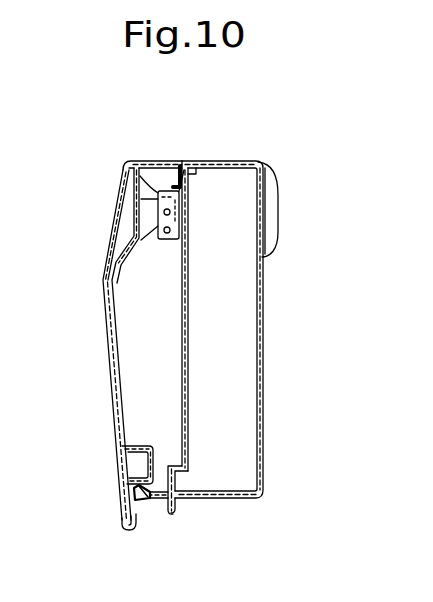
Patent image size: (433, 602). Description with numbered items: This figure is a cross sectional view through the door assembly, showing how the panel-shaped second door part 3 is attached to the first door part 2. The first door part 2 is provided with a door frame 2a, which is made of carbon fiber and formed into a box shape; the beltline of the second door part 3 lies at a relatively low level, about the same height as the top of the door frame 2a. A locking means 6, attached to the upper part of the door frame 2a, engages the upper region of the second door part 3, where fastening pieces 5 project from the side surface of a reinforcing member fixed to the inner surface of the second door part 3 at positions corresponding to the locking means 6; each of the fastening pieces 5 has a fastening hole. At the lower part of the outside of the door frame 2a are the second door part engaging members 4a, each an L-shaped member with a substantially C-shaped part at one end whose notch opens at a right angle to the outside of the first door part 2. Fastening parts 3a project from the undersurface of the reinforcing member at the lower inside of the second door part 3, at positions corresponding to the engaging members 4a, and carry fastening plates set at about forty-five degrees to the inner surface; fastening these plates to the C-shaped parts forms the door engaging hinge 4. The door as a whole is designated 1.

The door panel 1 is at (141, 163).
The first door part 2 is at (263, 388).
The door frame 2a is at (263, 297).
The second door part 3 is at (105, 295).
The fastening parts 3a is at (131, 502).
The door engaging hinge 4 is at (144, 499).
The second door part engaging members 4a is at (165, 465).
The fastening pieces 5 is at (134, 193).
The locking means 6 is at (178, 166).